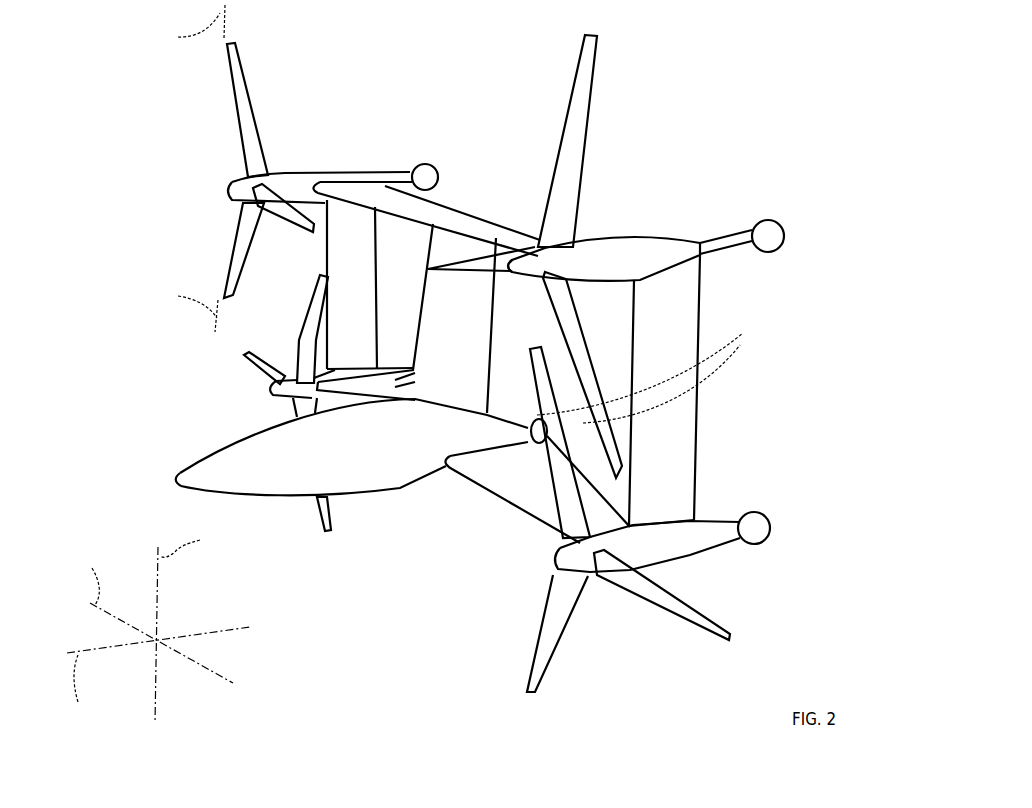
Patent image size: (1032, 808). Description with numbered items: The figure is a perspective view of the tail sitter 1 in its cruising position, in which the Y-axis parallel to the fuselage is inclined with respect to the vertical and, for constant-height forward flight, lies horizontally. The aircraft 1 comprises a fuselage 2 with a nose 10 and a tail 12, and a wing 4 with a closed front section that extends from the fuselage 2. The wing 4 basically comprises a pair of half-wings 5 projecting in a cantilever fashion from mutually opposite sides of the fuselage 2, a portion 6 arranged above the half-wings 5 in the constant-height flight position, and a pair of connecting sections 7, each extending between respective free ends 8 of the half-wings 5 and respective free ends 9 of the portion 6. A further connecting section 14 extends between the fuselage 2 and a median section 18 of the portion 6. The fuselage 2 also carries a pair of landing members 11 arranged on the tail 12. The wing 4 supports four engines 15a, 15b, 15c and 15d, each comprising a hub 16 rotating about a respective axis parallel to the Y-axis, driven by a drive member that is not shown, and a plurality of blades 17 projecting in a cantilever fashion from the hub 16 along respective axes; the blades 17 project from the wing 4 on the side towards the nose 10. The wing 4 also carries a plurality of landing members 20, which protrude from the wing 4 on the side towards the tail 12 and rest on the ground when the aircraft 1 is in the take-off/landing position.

The tail sitter 1 is at (675, 118).
The fuselage 2 is at (372, 468).
The wing 4 is at (618, 176).
The half-wings 5 is at (503, 457).
The portion 6 is at (520, 217).
The connecting sections 7 is at (371, 228).
The free ends 8 is at (357, 370).
The free ends 9 is at (337, 173).
The nose 10 is at (178, 478).
The landing members 11 is at (651, 368).
The tail 12 is at (529, 447).
The further connecting section 14 is at (463, 368).
The engine 15a is at (216, 343).
The engine 15b is at (598, 645).
The engine 15c is at (318, 118).
The engine 15d is at (545, 62).
The hub 16 is at (238, 186).
The blades 17 is at (246, 117).
The median section 18 is at (470, 222).
The landing members 20 is at (425, 170).